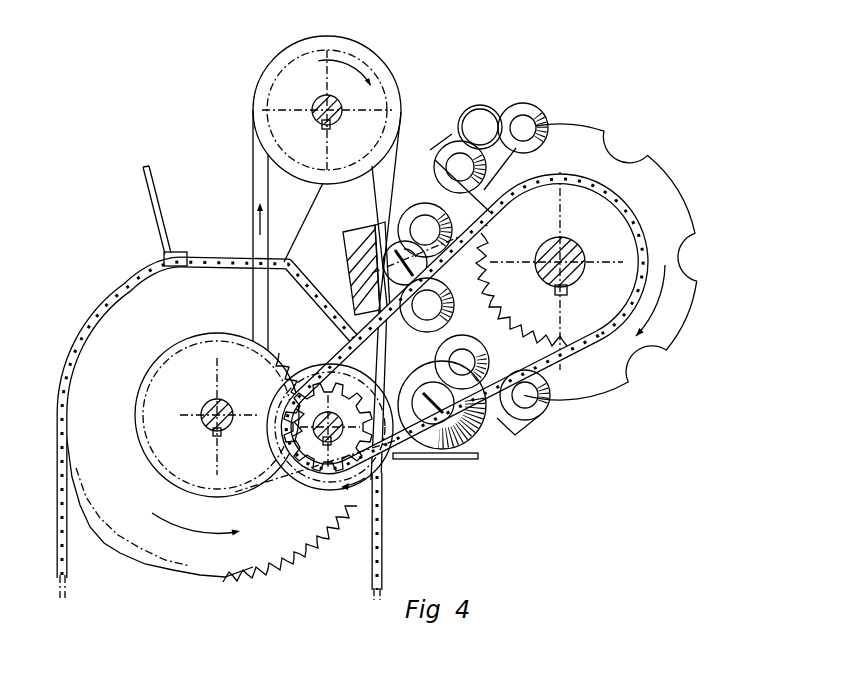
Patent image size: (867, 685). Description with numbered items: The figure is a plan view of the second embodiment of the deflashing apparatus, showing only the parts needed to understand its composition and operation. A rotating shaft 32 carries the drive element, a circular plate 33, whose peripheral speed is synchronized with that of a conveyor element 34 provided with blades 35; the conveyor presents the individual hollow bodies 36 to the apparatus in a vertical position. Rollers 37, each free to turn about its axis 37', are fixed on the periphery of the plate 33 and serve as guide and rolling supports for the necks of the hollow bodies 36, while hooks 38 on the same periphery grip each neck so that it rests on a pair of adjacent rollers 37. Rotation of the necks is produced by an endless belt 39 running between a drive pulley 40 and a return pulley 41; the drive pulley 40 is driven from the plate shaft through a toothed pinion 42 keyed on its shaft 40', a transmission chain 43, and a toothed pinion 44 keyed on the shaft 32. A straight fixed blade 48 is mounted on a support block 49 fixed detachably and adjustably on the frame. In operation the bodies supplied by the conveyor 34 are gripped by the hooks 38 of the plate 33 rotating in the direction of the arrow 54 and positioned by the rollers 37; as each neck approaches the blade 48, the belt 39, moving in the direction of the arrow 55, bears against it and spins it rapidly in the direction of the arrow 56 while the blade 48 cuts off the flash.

The rotating shaft 32 is at (570, 252).
The circular plate 33 is at (685, 289).
The conveyor element 34 is at (140, 273).
The blades 35 is at (153, 185).
The hollow bodies 36 is at (459, 430).
The rollers 37 is at (538, 408).
The roller axis 37' is at (503, 111).
The hooks 38 is at (490, 187).
The endless belt 39 is at (260, 185).
The drive pulley 40 is at (317, 482).
The drive pulley shaft 40' is at (219, 415).
The return pulley 41 is at (384, 78).
The toothed pinion 42 is at (378, 462).
The transmission chain 43 is at (598, 333).
The toothed pinion 44 is at (614, 243).
The fixed blade 48 is at (370, 242).
The support block 49 is at (358, 277).
The arrow 54 is at (658, 300).
The arrow 55 is at (275, 212).
The arrow 56 is at (431, 254).